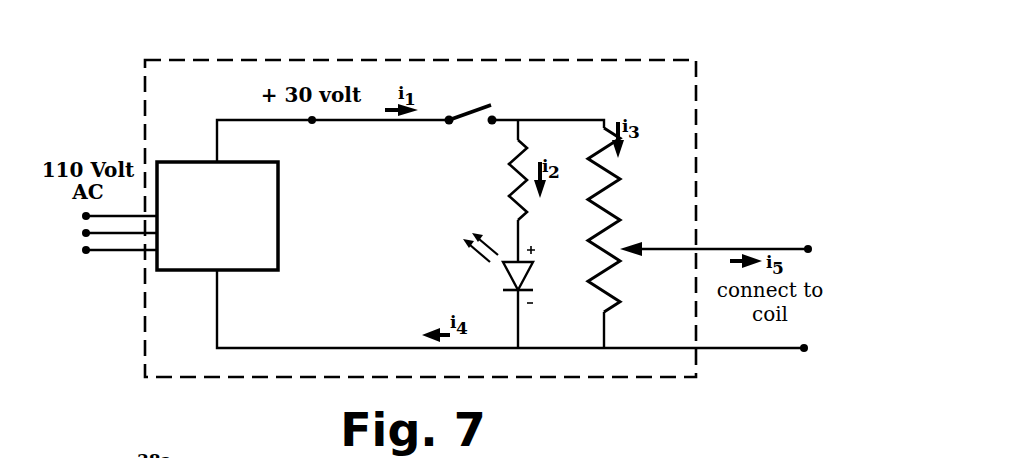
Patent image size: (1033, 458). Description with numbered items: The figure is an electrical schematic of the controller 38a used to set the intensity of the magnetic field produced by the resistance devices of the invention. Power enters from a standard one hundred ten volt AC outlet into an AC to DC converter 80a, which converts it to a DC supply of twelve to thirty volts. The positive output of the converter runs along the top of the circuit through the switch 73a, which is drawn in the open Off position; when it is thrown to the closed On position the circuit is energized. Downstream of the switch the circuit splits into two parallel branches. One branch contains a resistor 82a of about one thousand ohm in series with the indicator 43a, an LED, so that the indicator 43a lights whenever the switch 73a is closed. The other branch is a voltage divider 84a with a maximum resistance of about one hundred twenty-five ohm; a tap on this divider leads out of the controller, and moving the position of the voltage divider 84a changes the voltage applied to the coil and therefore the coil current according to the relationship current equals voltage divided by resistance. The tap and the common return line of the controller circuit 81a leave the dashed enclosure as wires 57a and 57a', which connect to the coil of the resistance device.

The controller 38a is at (592, 60).
The AC to DC converter 80a is at (279, 187).
The switch 73a is at (468, 112).
The resistor 82a is at (510, 152).
The indicator 43a is at (504, 262).
The voltage divider 84a is at (628, 228).
The wire 57a is at (716, 213).
The wire 57a' is at (775, 389).
The controller circuit 81a is at (571, 350).